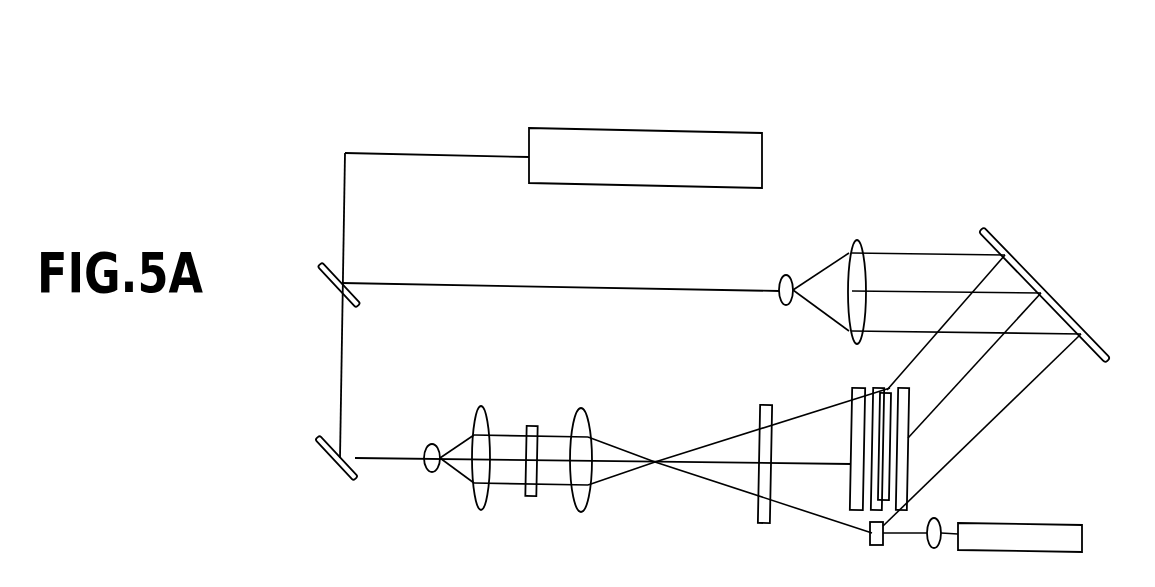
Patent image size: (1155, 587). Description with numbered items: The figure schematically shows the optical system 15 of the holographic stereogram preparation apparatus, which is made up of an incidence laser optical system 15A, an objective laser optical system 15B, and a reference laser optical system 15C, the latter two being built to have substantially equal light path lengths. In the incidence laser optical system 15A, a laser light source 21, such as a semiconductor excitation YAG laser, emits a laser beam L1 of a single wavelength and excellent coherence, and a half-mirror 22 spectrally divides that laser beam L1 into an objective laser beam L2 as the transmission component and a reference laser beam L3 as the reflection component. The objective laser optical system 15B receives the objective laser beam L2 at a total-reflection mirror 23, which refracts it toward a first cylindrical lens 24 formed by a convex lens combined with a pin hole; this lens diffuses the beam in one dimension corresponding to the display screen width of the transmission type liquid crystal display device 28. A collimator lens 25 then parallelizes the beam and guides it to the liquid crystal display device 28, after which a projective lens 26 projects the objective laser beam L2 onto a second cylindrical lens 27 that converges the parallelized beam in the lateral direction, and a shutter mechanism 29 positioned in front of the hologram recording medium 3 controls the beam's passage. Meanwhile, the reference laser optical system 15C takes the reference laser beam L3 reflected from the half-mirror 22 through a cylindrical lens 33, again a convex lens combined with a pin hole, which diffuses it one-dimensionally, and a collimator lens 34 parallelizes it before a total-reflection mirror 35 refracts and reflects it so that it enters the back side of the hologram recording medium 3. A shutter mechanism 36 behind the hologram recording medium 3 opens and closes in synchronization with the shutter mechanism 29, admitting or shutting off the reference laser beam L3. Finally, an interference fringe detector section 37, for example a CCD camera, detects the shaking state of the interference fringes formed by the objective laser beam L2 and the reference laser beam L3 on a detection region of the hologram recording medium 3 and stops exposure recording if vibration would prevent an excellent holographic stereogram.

The optical system 15 is at (312, 157).
The incidence laser optical system 15A is at (506, 124).
The objective laser optical system 15B is at (634, 432).
The reference laser optical system 15C is at (807, 195).
The laser light source 21 is at (661, 128).
The half-mirror 22 is at (326, 282).
The total-reflection mirror 23 is at (323, 460).
The first cylindrical lens 24 is at (433, 444).
The collimator lens 25 is at (480, 406).
The projective lens 26 is at (583, 407).
The second cylindrical lens 27 is at (764, 404).
The liquid crystal display device 28 is at (530, 426).
The shutter mechanism 29 is at (851, 479).
The hologram recording medium 3 is at (885, 450).
The cylindrical lens 33 is at (786, 305).
The collimator lens 34 is at (856, 240).
The total-reflection mirror 35 is at (1018, 258).
The shutter mechanism 36 is at (902, 407).
The interference fringe detector section 37 is at (1040, 523).
The laser beam L1 is at (449, 153).
The objective laser beam L2 is at (342, 384).
The reference laser beam L3 is at (408, 282).